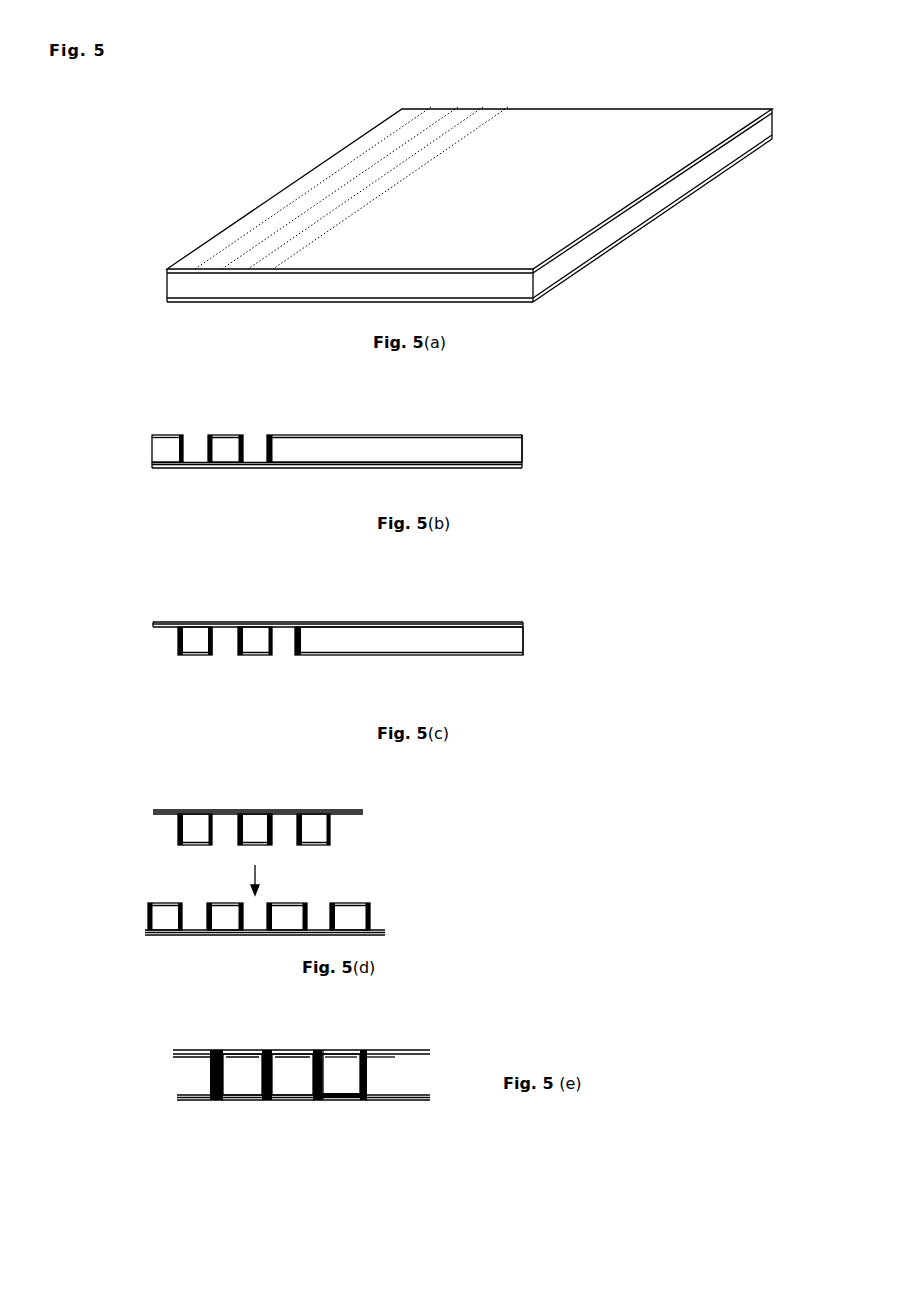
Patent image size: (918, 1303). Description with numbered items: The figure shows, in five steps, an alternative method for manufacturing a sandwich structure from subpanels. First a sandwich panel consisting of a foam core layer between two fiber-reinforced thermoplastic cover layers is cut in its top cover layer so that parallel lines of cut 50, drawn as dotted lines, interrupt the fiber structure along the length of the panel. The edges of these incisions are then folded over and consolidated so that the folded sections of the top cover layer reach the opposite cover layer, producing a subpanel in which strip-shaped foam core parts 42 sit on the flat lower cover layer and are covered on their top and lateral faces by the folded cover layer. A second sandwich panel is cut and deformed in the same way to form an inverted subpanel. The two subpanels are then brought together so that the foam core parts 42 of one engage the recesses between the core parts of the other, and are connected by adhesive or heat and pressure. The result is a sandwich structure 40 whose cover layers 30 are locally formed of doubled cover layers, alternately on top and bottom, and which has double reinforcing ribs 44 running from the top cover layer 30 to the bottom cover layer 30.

The cover layers 30 is at (387, 1055).
The sandwich structure 40 is at (227, 1030).
The strip-shaped foam core parts 42 is at (235, 1085).
The reinforcing ribs 44 is at (323, 1063).
The lines of cut 50 is at (410, 139).